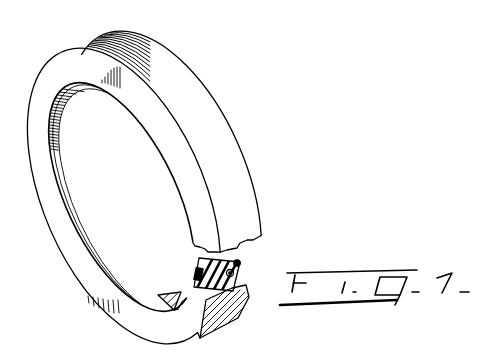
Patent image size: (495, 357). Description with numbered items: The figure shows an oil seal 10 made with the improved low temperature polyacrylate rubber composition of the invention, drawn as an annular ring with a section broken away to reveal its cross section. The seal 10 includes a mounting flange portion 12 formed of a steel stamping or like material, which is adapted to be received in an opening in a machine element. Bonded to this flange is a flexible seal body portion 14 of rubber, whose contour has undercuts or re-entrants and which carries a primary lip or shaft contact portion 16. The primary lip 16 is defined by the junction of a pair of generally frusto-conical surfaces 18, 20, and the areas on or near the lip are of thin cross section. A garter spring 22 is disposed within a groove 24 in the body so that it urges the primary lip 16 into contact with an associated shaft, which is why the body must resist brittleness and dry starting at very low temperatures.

The oil seal 10 is at (250, 143).
The mounting flange portion 12 is at (243, 205).
The seal body portion 14 is at (241, 262).
The primary lip 16 is at (207, 257).
The frusto-conical surface 18 is at (200, 270).
The frusto-conical surface 20 is at (251, 242).
The garter spring 22 is at (228, 295).
The groove 24 is at (234, 275).